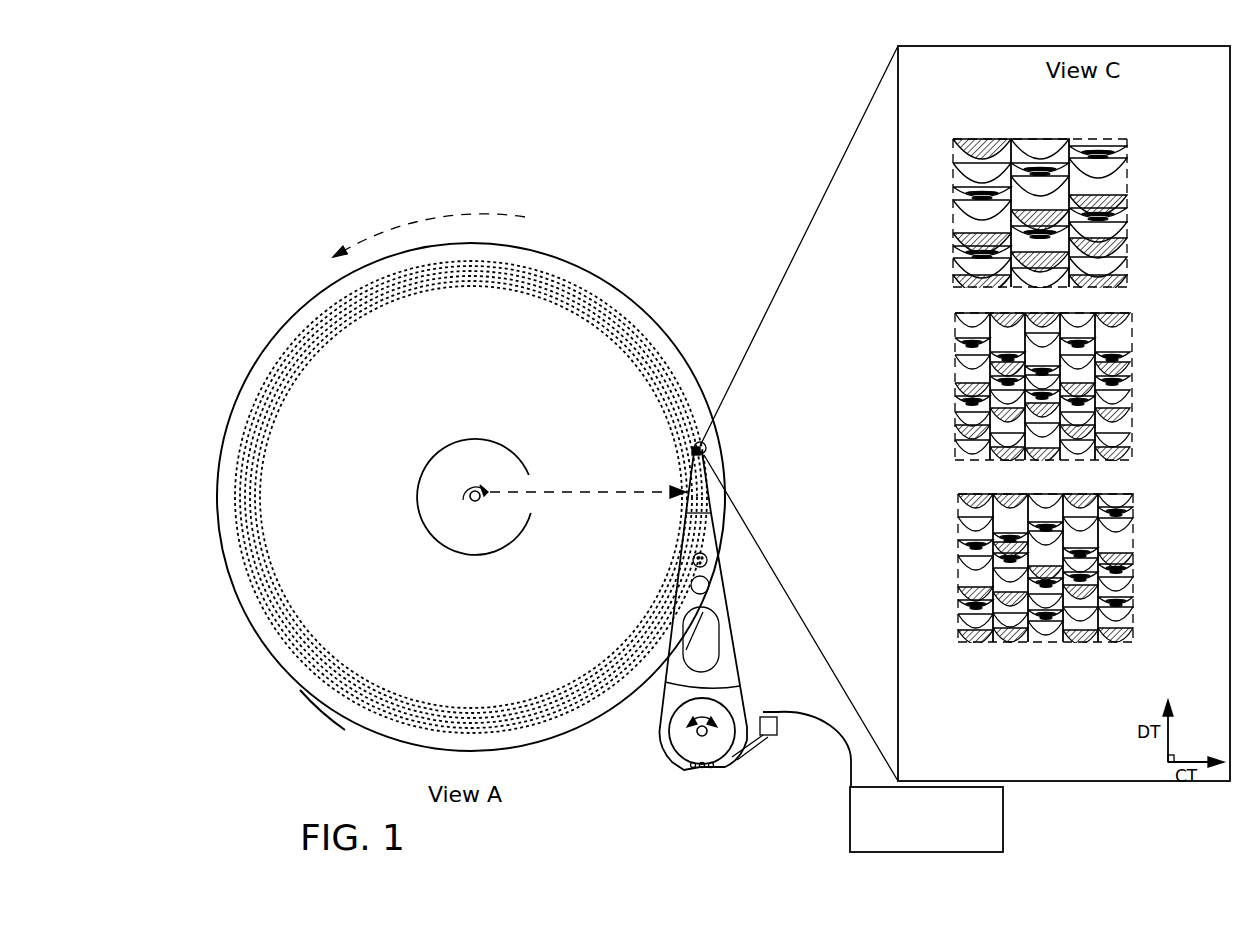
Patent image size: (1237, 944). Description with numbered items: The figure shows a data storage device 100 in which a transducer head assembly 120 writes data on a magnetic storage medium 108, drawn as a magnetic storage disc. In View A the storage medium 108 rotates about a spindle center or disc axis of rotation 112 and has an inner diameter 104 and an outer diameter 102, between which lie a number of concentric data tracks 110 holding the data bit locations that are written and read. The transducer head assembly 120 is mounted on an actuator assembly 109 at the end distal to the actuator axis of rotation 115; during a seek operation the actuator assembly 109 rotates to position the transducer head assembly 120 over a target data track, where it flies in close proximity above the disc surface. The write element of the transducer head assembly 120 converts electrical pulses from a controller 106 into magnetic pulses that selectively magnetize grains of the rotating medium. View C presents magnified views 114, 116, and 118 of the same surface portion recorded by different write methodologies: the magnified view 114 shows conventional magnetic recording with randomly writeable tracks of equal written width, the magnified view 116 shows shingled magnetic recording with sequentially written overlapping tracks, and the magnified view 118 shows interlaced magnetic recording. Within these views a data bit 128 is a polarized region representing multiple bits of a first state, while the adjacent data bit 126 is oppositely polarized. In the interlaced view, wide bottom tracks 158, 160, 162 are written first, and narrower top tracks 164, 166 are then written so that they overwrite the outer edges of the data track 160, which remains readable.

The data storage device 100 is at (302, 137).
The outer diameter 102 is at (303, 310).
The inner diameter 104 is at (420, 505).
The controller 106 is at (867, 782).
The magnetic storage medium 108 is at (322, 705).
The actuator assembly 109 is at (723, 597).
The concentric data tracks 110 is at (277, 625).
The disc axis of rotation 112 is at (468, 493).
The magnified view 114 is at (1128, 215).
The actuator axis of rotation 115 is at (700, 731).
The magnified view 116 is at (1133, 385).
The magnified view 118 is at (1132, 572).
The transducer head assembly 120 is at (704, 452).
The data bit 126 is at (995, 141).
The data bit 128 is at (1041, 146).
The data track 158 is at (977, 660).
The data track 160 is at (1043, 660).
The data track 162 is at (1113, 660).
The data track 164 is at (1008, 660).
The data track 166 is at (1080, 660).